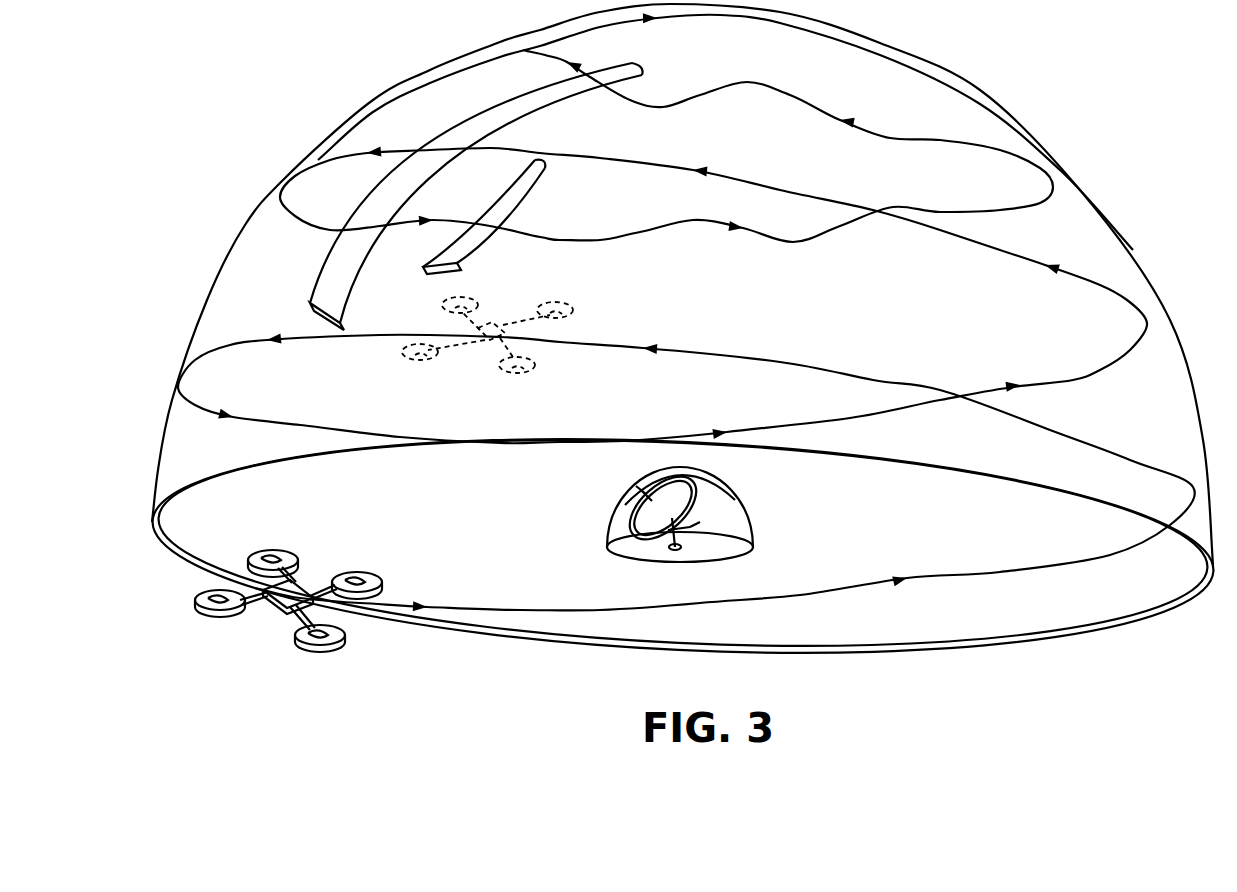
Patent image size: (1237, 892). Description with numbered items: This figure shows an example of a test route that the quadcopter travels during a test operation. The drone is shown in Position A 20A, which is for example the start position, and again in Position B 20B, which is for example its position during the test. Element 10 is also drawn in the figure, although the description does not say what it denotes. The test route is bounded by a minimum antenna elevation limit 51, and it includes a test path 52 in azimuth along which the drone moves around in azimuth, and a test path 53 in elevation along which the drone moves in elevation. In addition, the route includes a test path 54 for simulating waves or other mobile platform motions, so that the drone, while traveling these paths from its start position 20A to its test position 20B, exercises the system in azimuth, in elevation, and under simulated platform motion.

The ground station 10 is at (721, 549).
The drone in Position A 20A is at (230, 617).
The drone in Position B 20B is at (452, 332).
The minimum antenna elevation limit 51 is at (1080, 638).
The test path in azimuth 52 is at (1070, 377).
The test path in elevation 53 is at (200, 313).
The test path for simulating waves or other mobile platform motions 54 is at (817, 103).